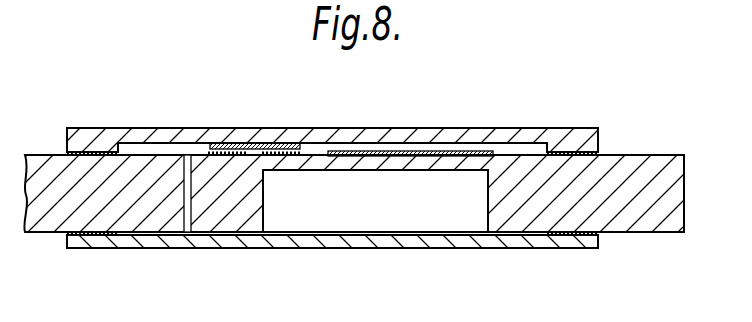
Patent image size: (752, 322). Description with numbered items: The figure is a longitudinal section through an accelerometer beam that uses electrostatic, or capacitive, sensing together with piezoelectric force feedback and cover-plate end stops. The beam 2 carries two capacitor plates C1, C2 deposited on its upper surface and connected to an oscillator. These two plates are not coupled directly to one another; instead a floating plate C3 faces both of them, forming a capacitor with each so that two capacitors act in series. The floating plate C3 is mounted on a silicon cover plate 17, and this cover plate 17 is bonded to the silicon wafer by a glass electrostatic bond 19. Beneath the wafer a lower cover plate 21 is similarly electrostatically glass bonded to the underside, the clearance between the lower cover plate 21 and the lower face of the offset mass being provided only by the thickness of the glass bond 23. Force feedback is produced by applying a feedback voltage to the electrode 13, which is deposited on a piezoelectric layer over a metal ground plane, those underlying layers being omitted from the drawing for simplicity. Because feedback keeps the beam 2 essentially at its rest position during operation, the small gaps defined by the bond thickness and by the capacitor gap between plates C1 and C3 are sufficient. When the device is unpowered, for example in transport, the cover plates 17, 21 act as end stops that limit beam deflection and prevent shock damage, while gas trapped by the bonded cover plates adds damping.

The beam 2 is at (302, 177).
The electrode 13 is at (452, 151).
The cover plate 17 is at (380, 135).
The glass electrostatic bond 19 is at (102, 133).
The lower cover plate 21 is at (437, 243).
The glass bond 23 is at (83, 236).
The capacitor plate C1 is at (223, 140).
The capacitor plate C2 is at (283, 140).
The floating plate C3 is at (260, 137).